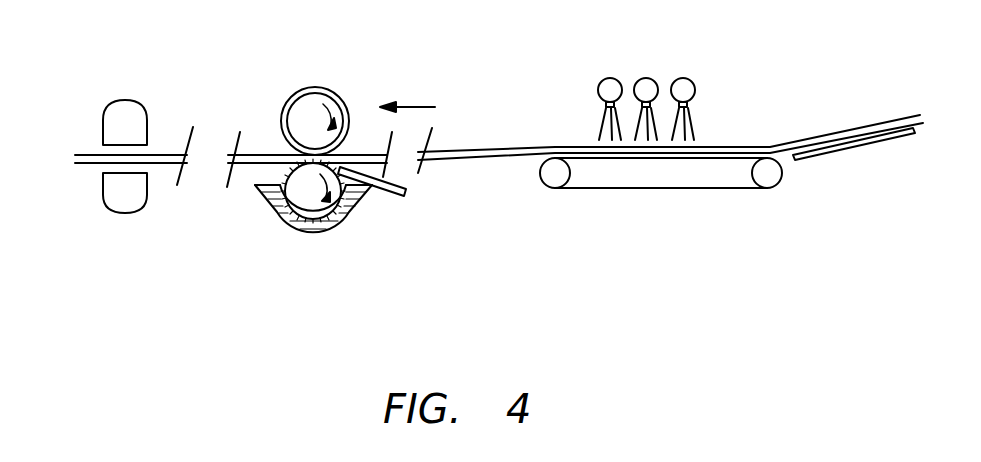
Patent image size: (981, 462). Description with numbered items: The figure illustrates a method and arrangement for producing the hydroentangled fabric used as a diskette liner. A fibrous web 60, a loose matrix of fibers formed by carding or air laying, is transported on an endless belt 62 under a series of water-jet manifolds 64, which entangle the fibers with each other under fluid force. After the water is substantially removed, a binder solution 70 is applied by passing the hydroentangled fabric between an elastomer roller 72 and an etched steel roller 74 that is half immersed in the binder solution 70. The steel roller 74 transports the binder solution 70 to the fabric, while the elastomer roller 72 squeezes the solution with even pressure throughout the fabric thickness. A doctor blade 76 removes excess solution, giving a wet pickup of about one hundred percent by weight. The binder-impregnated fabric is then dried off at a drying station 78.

The fibrous web 60 is at (812, 132).
The endless belt 62 is at (665, 173).
The water-jet manifolds 64 is at (610, 78).
The binder solution 70 is at (353, 210).
The elastomer roller 72 is at (317, 87).
The etched steel roller 74 is at (303, 197).
The doctor blade 76 is at (402, 197).
The drying station 78 is at (130, 100).